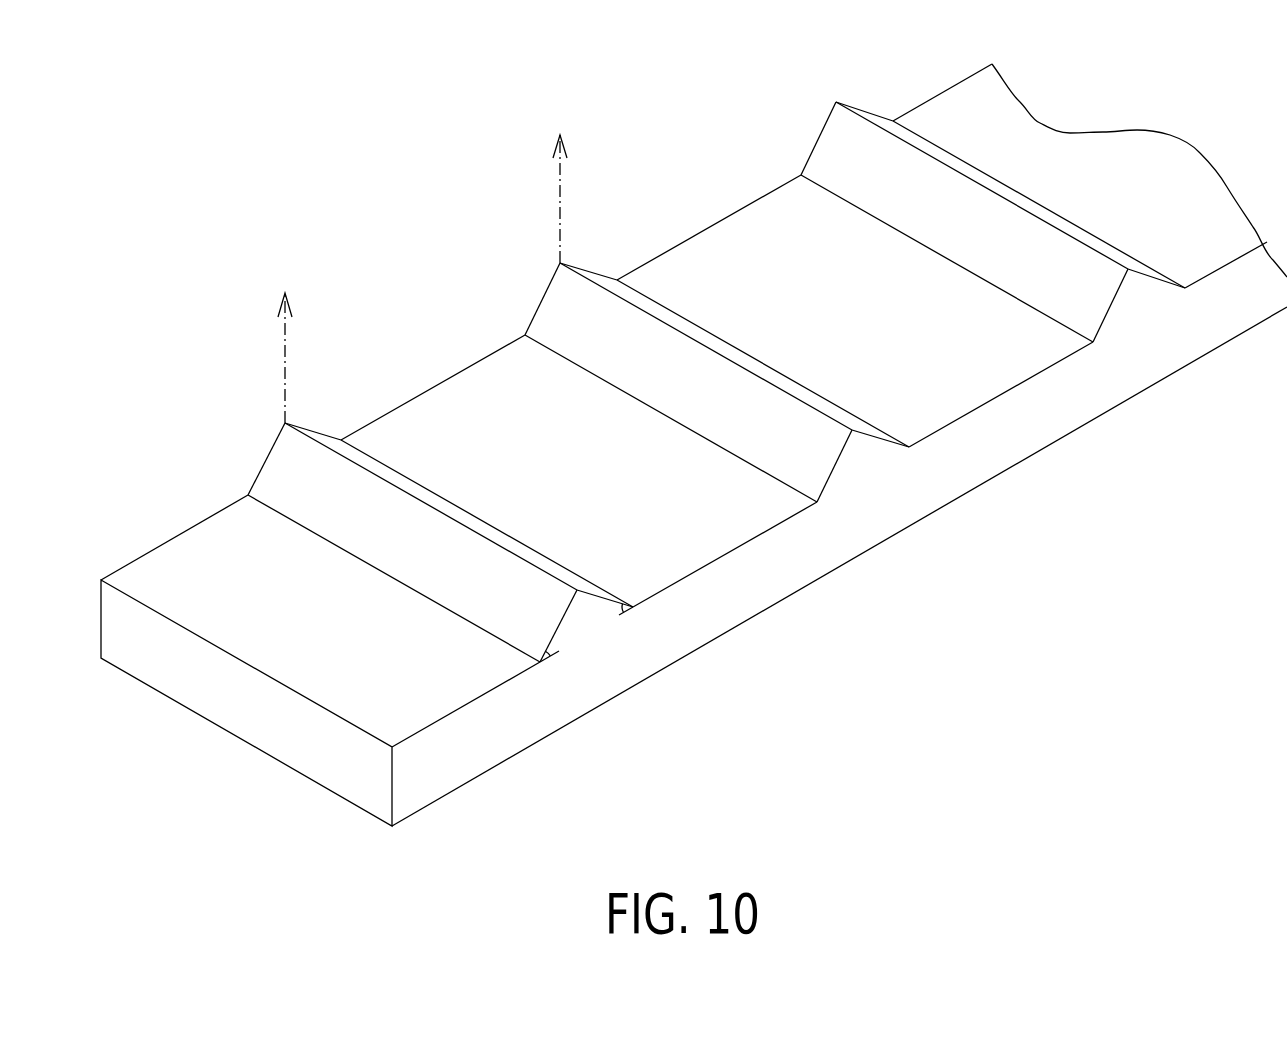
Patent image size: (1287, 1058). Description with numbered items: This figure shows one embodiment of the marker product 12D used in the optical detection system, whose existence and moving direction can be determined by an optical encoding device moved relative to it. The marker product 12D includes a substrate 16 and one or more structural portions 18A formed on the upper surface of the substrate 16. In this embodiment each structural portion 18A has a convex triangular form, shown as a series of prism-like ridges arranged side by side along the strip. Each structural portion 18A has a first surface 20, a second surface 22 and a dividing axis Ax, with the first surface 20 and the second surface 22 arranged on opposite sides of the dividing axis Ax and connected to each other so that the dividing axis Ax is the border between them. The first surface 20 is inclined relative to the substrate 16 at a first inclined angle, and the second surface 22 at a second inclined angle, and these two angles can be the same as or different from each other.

The marker product 12D is at (1112, 622).
The substrate 16 is at (500, 728).
The structural portion 18A is at (588, 623).
The first surface 20 is at (260, 458).
The second surface 22 is at (317, 430).
The dividing axis Ax is at (422, 260).